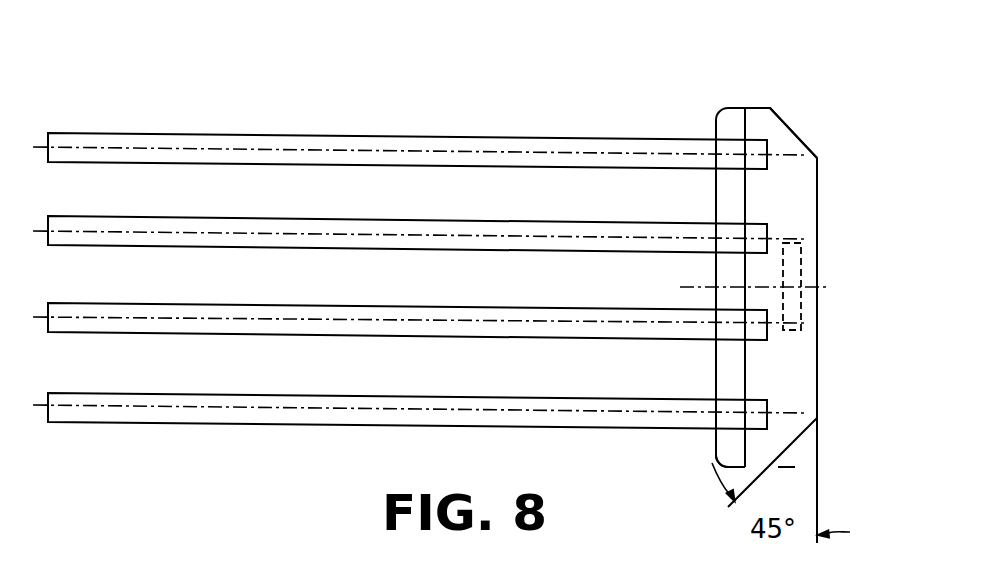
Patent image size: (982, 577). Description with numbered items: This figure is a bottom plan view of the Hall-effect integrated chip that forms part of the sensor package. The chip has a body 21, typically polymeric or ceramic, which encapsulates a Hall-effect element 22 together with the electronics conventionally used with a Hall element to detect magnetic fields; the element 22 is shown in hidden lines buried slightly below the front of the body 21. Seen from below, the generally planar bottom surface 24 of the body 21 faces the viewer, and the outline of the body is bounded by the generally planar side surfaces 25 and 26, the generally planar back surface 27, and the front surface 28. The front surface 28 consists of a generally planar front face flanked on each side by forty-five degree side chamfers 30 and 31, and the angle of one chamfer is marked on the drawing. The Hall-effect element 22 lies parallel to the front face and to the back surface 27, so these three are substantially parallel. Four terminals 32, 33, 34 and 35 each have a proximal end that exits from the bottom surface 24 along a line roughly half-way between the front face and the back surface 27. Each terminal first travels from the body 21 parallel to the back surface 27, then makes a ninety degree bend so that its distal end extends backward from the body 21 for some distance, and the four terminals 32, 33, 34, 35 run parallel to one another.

The body 21 is at (793, 182).
The Hall-effect element 22 is at (797, 248).
The bottom surface 24 is at (787, 372).
The side surface 25 is at (752, 102).
The side surface 26 is at (741, 472).
The back surface 27 is at (708, 184).
The front surface 28 is at (826, 337).
The side chamfer 30 is at (816, 135).
The side chamfer 31 is at (804, 449).
The terminal 32 is at (152, 139).
The terminal 33 is at (152, 222).
The terminal 34 is at (150, 310).
The terminal 35 is at (150, 401).